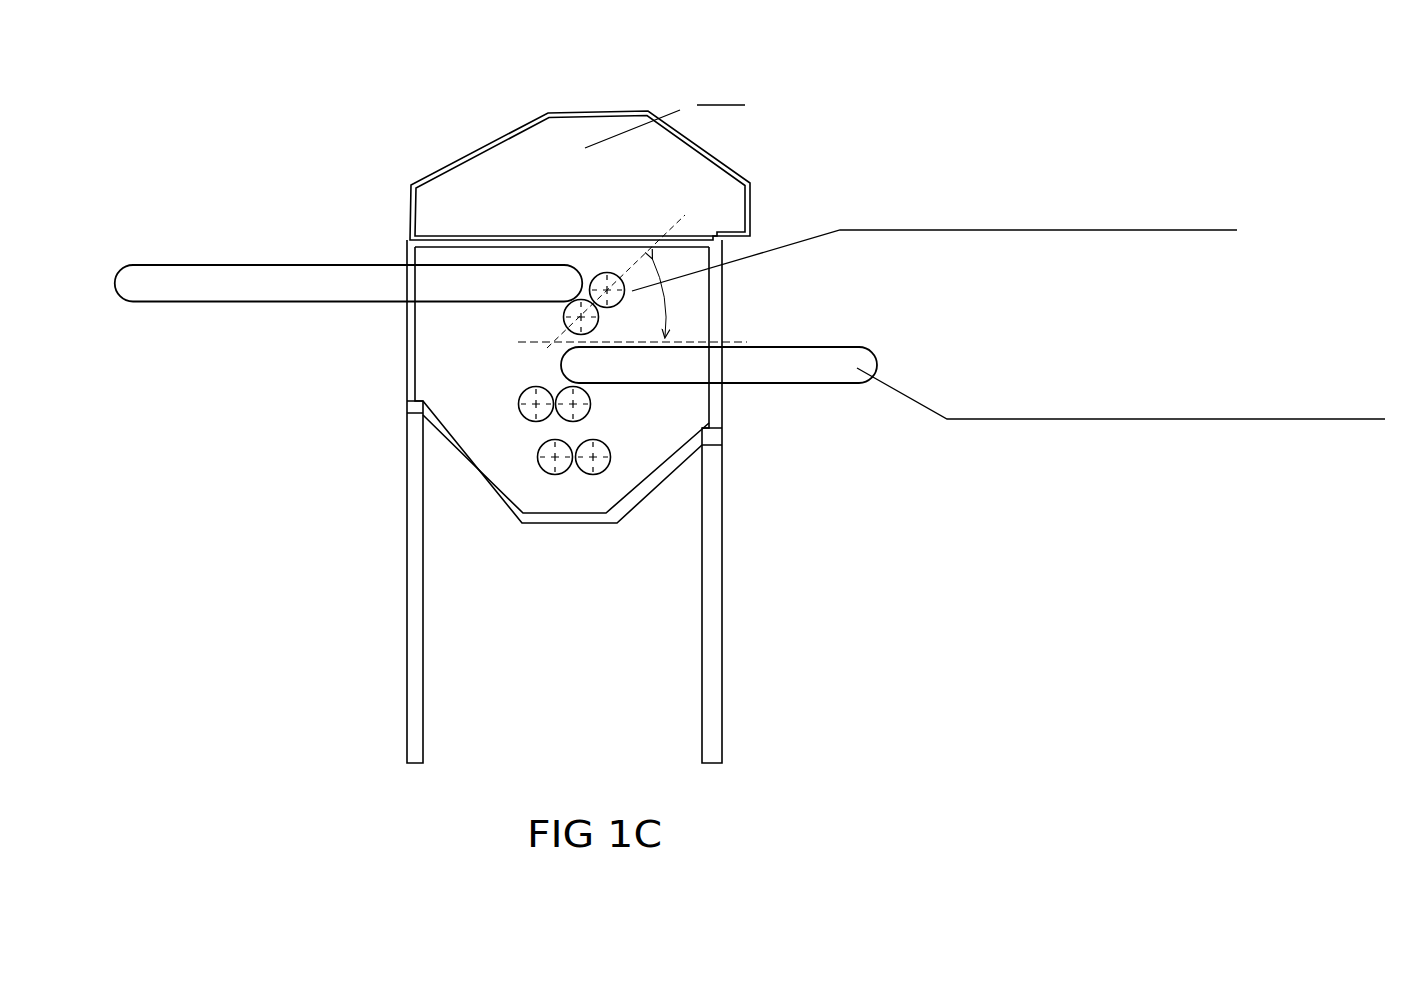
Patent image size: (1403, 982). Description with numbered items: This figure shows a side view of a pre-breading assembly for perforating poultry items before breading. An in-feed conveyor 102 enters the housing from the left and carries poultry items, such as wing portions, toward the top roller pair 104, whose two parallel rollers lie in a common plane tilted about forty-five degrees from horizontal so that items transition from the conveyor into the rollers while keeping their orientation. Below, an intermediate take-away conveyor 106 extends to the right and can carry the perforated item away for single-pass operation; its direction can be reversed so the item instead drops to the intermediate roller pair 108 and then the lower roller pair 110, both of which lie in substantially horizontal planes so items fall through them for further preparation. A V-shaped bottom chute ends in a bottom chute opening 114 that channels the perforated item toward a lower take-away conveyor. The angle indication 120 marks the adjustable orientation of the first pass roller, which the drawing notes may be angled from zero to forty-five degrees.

The in-feed conveyor 102 is at (592, 72).
The top roller pair 104 is at (557, 318).
The intermediate take-away conveyor 106 is at (557, 363).
The intermediate roller pair 108 is at (515, 416).
The lower roller pair 110 is at (537, 468).
The bottom chute opening 114 is at (552, 532).
The first pass roller angle adjustment 120 is at (678, 302).